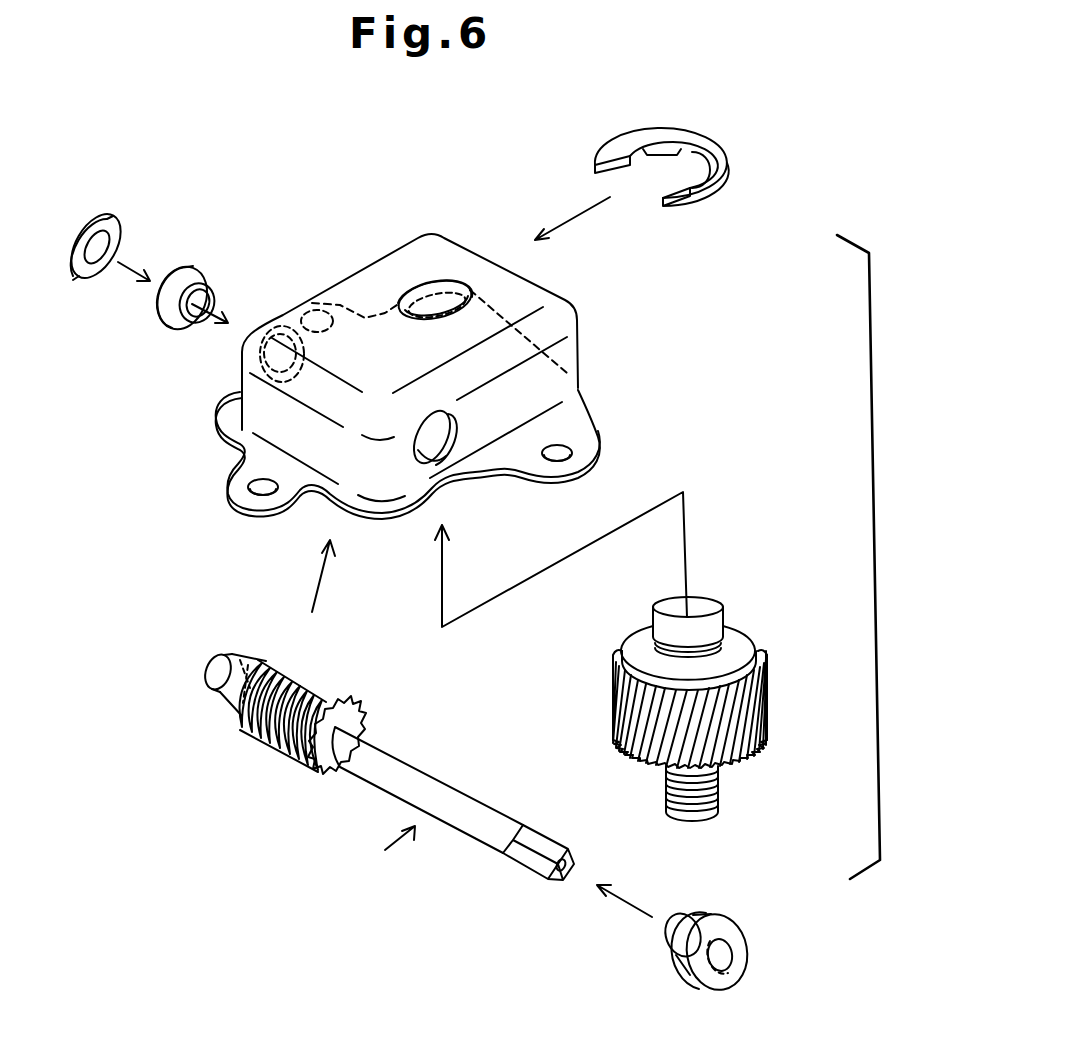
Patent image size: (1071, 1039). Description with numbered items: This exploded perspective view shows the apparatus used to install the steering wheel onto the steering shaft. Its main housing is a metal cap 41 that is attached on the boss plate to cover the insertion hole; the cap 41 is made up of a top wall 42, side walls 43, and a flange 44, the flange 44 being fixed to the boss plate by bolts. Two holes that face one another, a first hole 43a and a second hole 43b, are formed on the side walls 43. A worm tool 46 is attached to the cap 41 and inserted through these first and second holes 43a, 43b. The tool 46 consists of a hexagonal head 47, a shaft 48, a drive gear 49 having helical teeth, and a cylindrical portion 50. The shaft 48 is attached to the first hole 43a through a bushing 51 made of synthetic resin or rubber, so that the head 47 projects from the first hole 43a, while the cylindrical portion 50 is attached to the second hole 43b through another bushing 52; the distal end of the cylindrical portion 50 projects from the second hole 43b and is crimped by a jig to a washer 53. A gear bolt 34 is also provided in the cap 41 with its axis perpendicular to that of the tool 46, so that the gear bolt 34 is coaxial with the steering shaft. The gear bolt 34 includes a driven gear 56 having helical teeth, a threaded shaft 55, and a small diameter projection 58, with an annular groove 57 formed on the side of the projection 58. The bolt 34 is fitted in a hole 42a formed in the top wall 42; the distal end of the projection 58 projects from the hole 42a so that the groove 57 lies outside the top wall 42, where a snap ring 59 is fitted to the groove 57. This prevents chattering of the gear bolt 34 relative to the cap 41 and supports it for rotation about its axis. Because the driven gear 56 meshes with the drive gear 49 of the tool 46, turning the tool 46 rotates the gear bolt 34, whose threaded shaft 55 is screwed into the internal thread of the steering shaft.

The gear bolt 34 is at (680, 704).
The cap 41 is at (420, 238).
The top wall 42 is at (447, 257).
The hole 42a is at (495, 288).
The side walls 43 is at (478, 417).
The first hole 43a is at (445, 442).
The second hole 43b is at (258, 363).
The flange 44 is at (218, 433).
The worm tool 46 is at (380, 763).
The hexagonal head 47 is at (563, 841).
The shaft 48 is at (442, 782).
The drive gear 49 is at (305, 680).
The cylindrical portion 50 is at (208, 660).
The bushing 51 is at (747, 932).
The bushing 52 is at (208, 277).
The washer 53 is at (110, 228).
The threaded shaft 55 is at (720, 787).
The driven gear 56 is at (613, 706).
The annular groove 57 is at (728, 637).
The small diameter projection 58 is at (705, 597).
The snap ring 59 is at (692, 192).